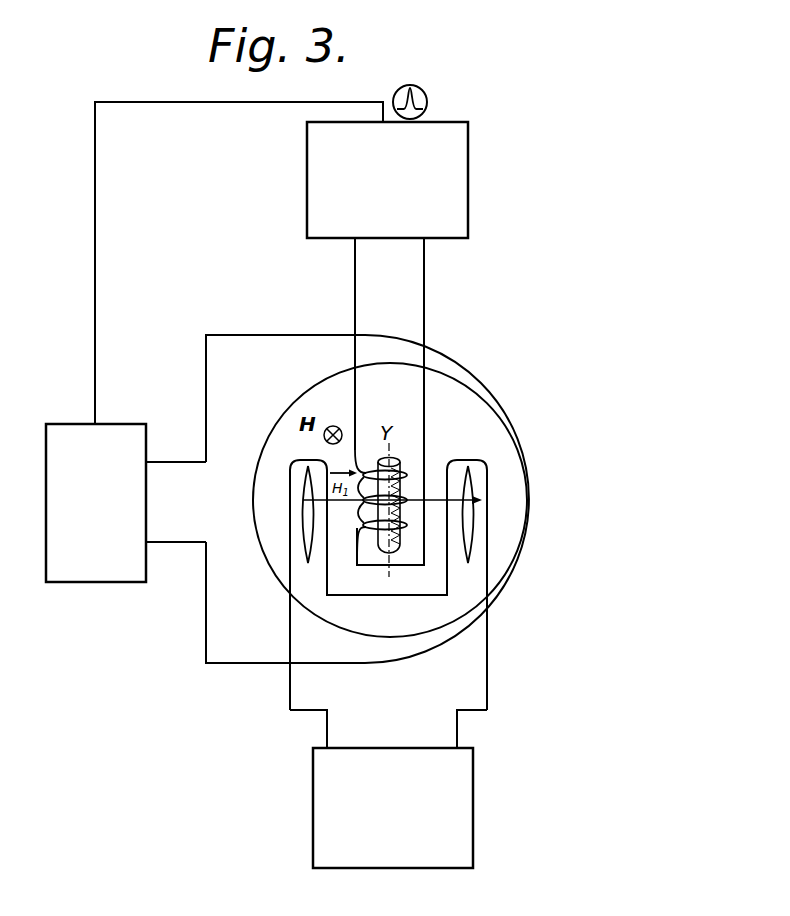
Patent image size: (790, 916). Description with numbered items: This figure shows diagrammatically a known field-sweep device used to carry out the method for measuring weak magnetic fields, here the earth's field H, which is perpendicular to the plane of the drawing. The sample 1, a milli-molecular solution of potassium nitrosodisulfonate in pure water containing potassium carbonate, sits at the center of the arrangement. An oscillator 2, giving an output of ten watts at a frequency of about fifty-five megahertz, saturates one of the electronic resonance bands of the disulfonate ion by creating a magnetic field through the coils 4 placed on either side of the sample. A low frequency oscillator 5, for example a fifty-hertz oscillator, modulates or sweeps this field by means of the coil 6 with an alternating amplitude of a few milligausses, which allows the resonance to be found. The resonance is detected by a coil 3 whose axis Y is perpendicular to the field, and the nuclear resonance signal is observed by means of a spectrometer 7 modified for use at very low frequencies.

The sample 1 is at (392, 462).
The oscillator 2 is at (455, 797).
The coil 3 is at (405, 527).
The coils 4 is at (300, 538).
The low frequency oscillator 5 is at (108, 548).
The coil 6 is at (468, 385).
The spectrometer 7 is at (442, 170).